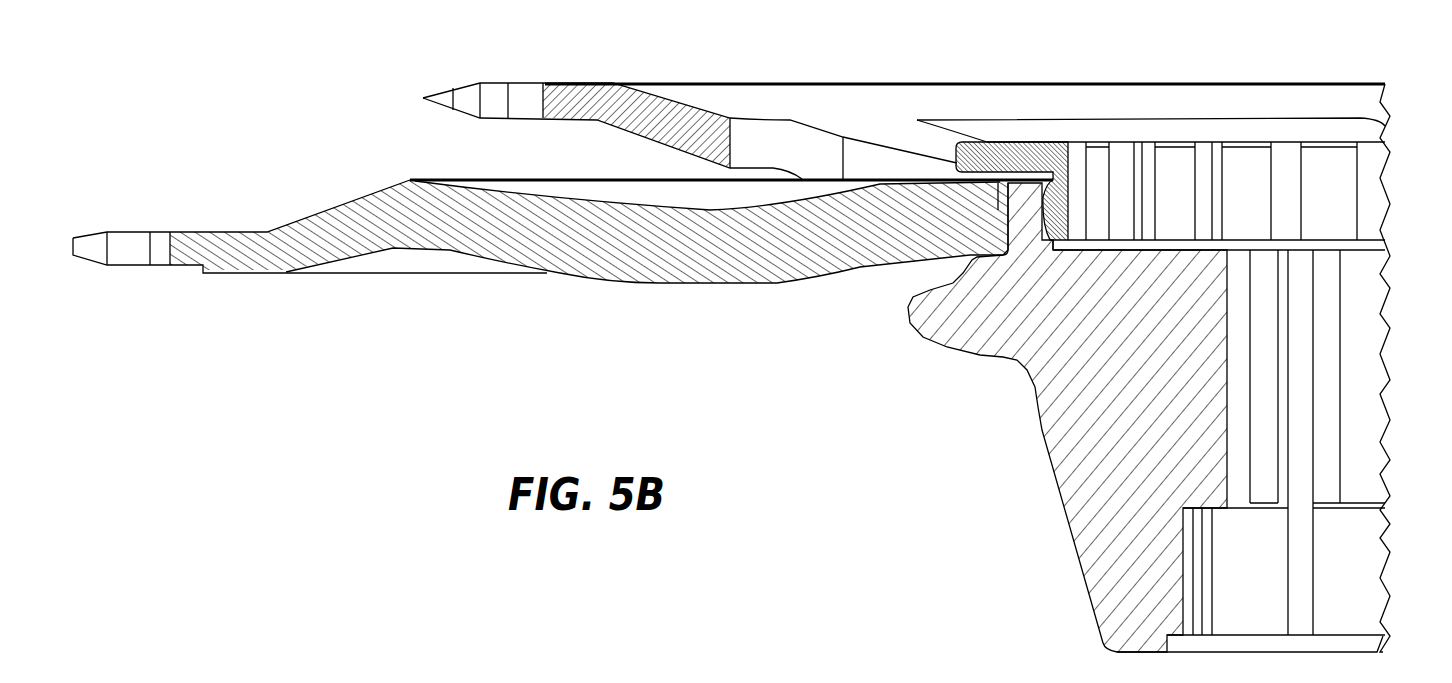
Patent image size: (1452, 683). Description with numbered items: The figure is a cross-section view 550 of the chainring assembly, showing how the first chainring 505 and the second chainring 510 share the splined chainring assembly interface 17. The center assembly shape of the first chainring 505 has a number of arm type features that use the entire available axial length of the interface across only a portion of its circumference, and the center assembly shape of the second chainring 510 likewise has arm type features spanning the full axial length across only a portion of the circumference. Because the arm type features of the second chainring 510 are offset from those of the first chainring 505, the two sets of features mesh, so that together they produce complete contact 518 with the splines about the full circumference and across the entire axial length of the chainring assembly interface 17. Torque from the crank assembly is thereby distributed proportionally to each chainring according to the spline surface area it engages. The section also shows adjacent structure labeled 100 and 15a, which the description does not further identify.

The cross-section view 550 is at (221, 58).
The first chainring 505 is at (190, 267).
The second chainring 510 is at (560, 82).
The complete contact 518 is at (993, 147).
The probe holder 100 is at (1365, 195).
The chainring assembly interface 17 is at (940, 347).
The base member 15a is at (1363, 560).